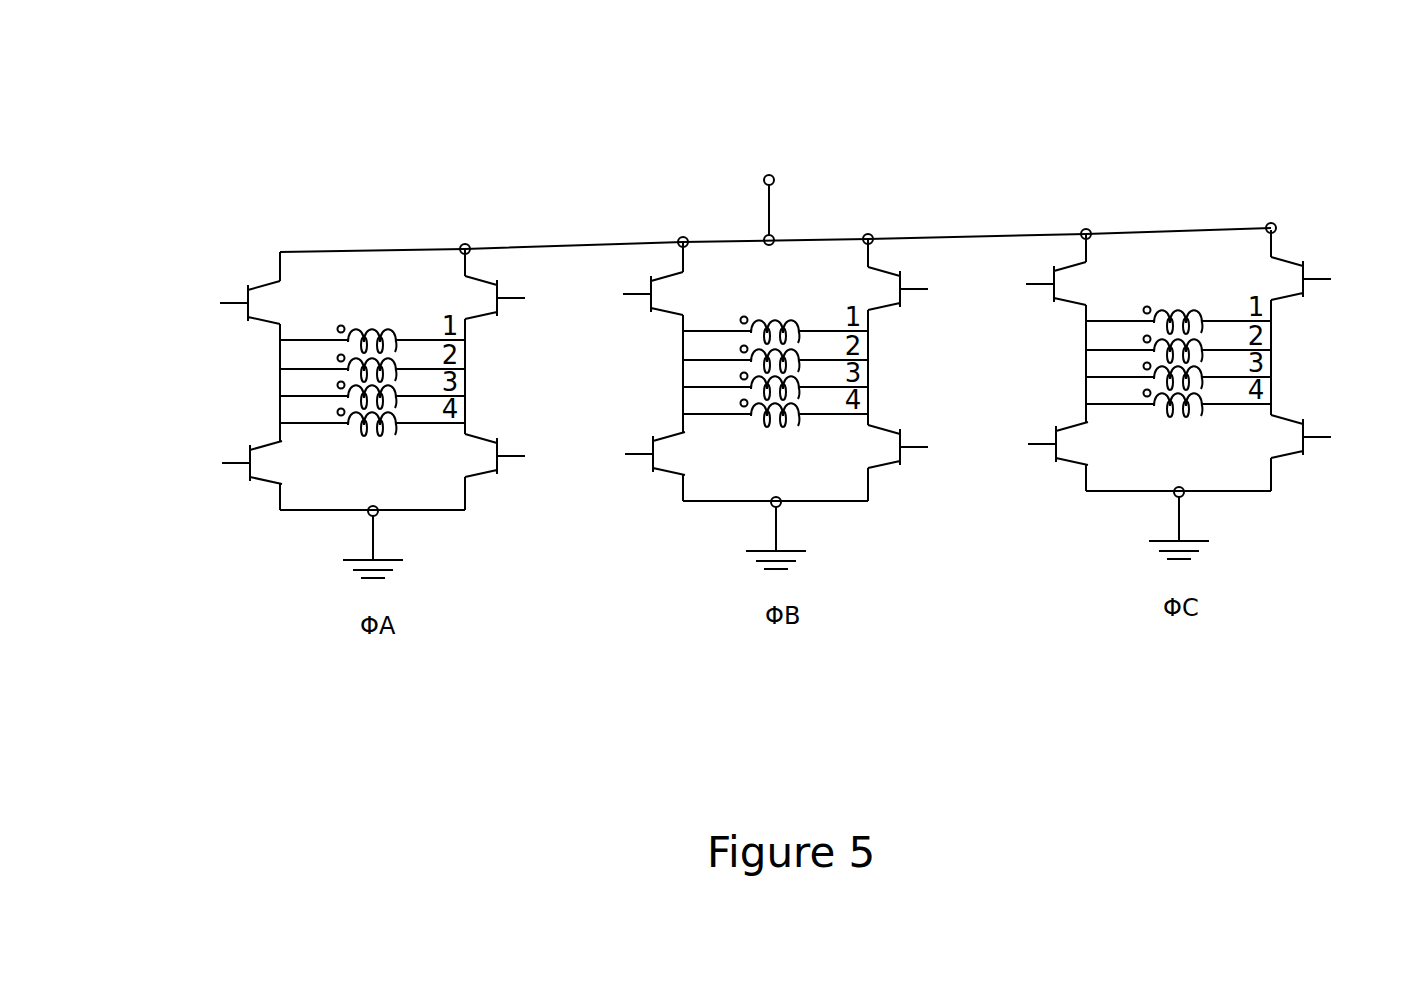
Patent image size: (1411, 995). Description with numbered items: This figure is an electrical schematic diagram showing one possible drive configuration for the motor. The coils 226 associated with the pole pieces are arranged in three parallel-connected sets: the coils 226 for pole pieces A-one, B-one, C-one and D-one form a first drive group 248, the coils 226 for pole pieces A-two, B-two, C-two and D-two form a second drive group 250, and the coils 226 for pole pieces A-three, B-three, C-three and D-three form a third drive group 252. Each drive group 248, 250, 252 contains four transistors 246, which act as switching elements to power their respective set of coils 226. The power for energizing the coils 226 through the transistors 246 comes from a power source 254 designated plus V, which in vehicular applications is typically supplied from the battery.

The coil 226 is at (386, 327).
The transistor 246 is at (233, 291).
The drive group 248 is at (312, 208).
The drive group 250 is at (832, 195).
The drive group 252 is at (1212, 186).
The power source 254 is at (777, 138).